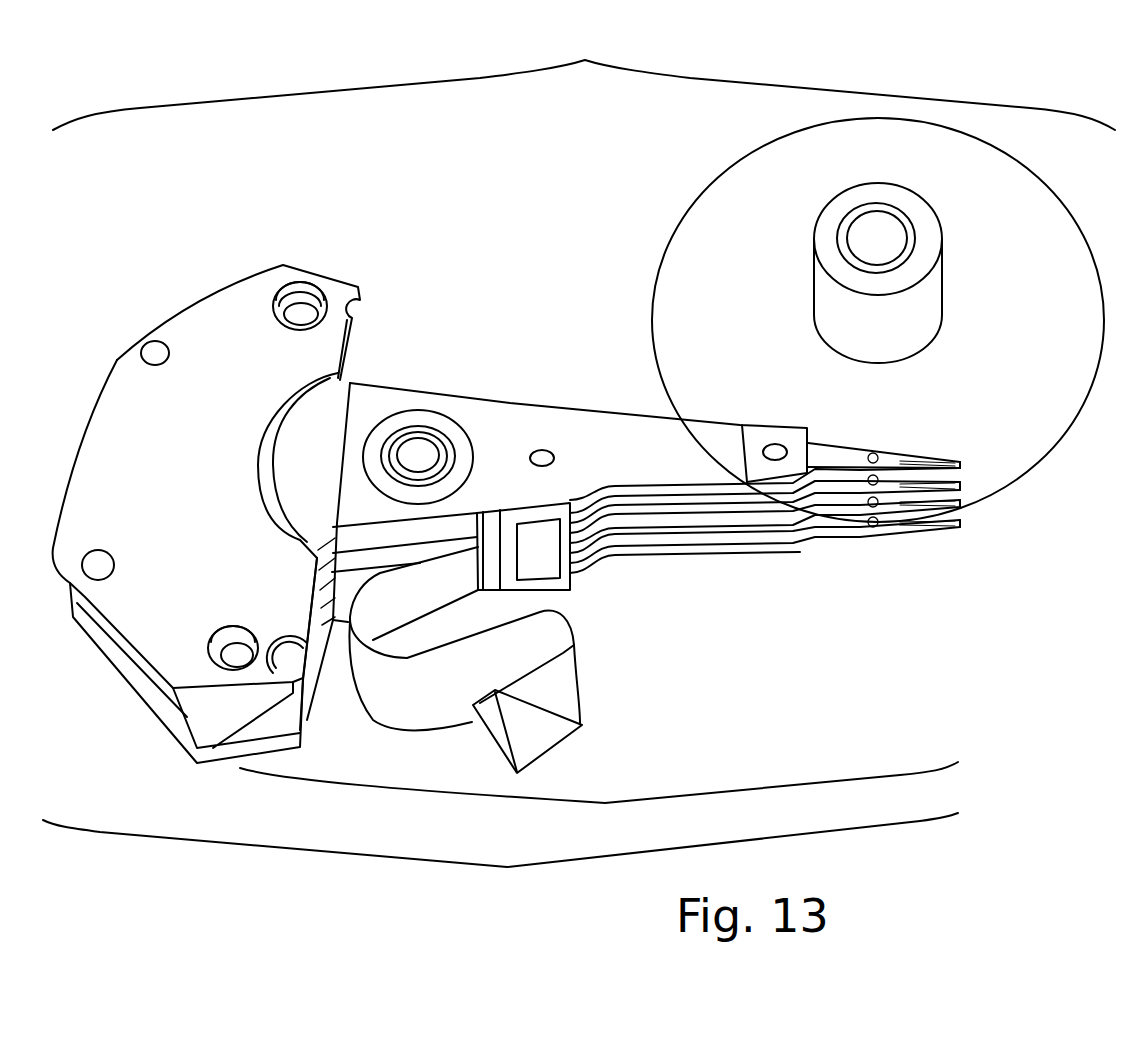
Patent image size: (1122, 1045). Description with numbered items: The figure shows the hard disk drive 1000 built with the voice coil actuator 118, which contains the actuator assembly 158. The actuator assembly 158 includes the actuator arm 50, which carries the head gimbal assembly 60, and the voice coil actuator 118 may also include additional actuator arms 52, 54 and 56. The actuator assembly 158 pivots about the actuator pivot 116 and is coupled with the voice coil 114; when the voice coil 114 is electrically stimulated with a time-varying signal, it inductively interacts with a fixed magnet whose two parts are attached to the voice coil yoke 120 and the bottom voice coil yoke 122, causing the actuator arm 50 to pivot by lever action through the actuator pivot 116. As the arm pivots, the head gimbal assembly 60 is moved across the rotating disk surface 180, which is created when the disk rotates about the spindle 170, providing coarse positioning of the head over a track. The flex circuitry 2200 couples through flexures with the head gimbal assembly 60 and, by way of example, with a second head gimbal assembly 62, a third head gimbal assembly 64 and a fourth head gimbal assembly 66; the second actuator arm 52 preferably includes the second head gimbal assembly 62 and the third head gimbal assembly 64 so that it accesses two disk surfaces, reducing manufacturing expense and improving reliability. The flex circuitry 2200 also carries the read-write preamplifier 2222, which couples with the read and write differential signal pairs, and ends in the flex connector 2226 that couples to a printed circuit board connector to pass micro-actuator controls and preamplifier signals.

The hard disk drive 1000 is at (584, 81).
The actuator assembly 158 is at (599, 801).
The voice coil actuator 118 is at (500, 857).
The rotating disk surface 180 is at (1003, 167).
The spindle 170 is at (928, 297).
The voice coil yoke 120 is at (218, 333).
The bottom voice coil yoke 122 is at (180, 742).
The voice coil 114 is at (307, 517).
The actuator arm 50 is at (663, 432).
The actuator pivot 116 is at (415, 458).
The read-write preamplifier 2222 is at (538, 522).
The second actuator arm 52 is at (727, 505).
The third actuator arm 54 is at (698, 527).
The fourth actuator arm 56 is at (677, 548).
The head gimbal assembly 60 is at (928, 463).
The second head gimbal assembly 62 is at (945, 480).
The third head gimbal assembly 64 is at (952, 502).
The fourth head gimbal assembly 66 is at (908, 522).
The flex circuitry 2200 is at (583, 707).
The flex connector 2226 is at (488, 730).